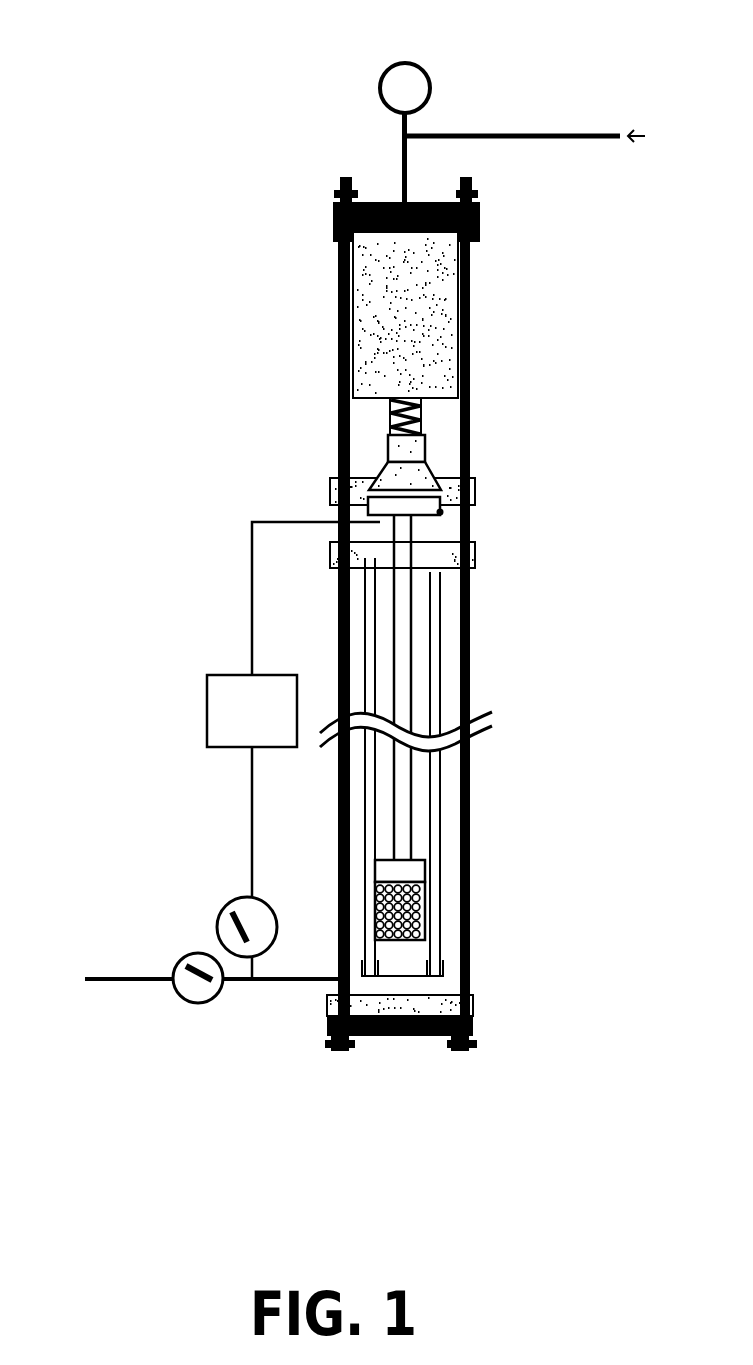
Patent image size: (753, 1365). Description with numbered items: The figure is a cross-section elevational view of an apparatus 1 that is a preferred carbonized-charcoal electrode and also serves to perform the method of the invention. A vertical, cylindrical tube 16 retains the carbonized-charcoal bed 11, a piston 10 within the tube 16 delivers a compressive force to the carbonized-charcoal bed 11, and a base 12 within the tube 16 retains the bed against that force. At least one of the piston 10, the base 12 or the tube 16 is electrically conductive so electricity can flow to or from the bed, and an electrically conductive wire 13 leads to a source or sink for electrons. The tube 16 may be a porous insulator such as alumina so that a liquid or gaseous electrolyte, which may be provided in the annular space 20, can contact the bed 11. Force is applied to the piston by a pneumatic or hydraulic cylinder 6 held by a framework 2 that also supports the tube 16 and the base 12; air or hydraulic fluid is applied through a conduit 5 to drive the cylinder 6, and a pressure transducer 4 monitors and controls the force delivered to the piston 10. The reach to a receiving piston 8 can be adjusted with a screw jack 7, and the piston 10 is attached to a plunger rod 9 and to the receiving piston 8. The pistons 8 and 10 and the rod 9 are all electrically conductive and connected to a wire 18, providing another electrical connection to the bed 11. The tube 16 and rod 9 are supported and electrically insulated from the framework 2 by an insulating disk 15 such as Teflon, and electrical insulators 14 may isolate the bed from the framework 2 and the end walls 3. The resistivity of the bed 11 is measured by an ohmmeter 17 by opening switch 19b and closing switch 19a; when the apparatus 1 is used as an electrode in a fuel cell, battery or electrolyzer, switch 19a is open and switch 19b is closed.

The apparatus 1 is at (240, 303).
The framework 2 is at (468, 413).
The end walls 3 is at (373, 200).
The pressure transducer 4 is at (428, 75).
The conduit 5 is at (540, 133).
The pneumatic or hydraulic cylinder 6 is at (440, 290).
The screw jack 7 is at (425, 440).
The receiving piston 8 is at (440, 527).
The plunger rod 9 is at (407, 612).
The piston 10 is at (412, 862).
The carbonized-charcoal bed 11 is at (425, 900).
The base 12 is at (417, 990).
The electrically conductive wire 13 is at (287, 983).
The electrical insulators 14 is at (473, 498).
The insulating disk 15 is at (475, 557).
The tube 16 is at (440, 671).
The ohmmeter 17 is at (207, 693).
The wire 18 is at (273, 520).
The switch 19a is at (233, 902).
The switch 19b is at (177, 997).
The annular space 20 is at (445, 935).